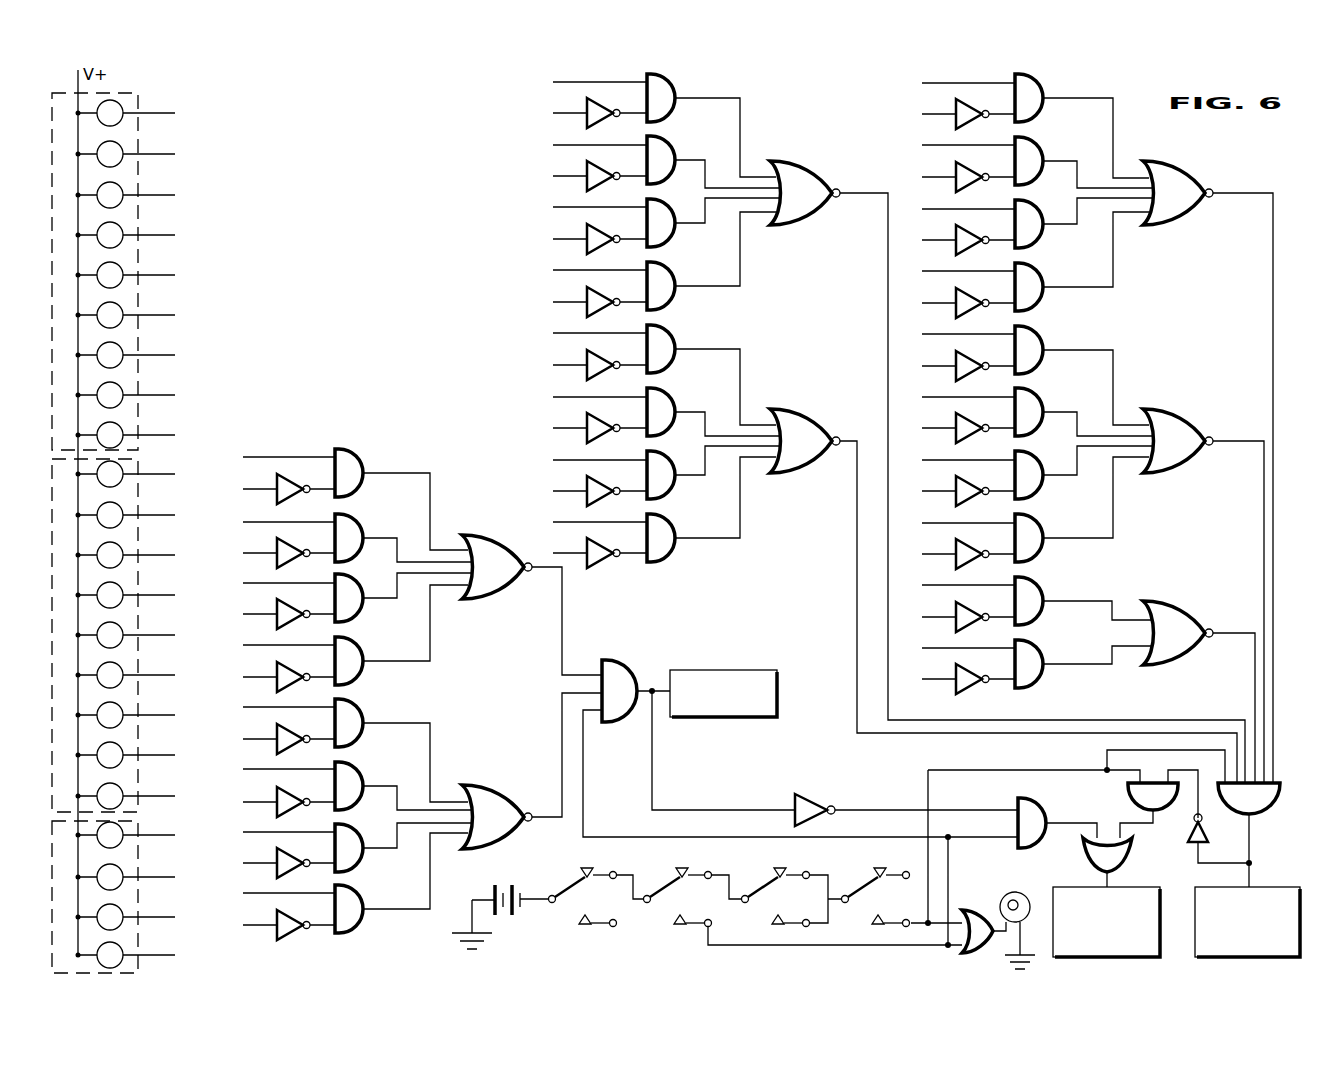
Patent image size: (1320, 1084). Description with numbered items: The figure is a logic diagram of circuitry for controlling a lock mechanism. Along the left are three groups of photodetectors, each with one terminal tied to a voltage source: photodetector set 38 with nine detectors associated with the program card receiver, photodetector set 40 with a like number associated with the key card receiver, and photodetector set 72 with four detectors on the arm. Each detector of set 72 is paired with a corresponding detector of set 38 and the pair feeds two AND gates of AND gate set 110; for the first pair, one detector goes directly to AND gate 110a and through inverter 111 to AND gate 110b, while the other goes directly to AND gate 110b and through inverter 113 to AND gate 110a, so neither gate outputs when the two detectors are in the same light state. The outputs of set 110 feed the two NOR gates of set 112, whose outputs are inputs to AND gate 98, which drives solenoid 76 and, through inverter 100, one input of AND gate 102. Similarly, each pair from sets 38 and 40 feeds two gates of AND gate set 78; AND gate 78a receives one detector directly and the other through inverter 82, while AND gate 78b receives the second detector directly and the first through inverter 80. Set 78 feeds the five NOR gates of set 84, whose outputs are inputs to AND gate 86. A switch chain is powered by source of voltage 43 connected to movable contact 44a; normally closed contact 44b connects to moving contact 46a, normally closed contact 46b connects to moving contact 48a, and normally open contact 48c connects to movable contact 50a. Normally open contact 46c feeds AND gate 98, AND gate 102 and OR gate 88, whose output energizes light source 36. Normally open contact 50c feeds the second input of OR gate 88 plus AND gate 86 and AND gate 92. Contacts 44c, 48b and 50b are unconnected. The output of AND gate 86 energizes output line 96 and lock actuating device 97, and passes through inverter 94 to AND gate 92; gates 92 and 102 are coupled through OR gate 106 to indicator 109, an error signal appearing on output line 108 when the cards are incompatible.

The light source 36 is at (1003, 896).
The photodetector set 38 is at (52, 340).
The photodetector set 40 is at (52, 670).
The source of voltage 43 is at (492, 894).
The movable contact 44a is at (581, 890).
The normally closed contact 44b is at (581, 890).
The normally-open switch contact 44c is at (564, 884).
The moving contact 46a is at (677, 890).
The normally closed contact 46b is at (677, 890).
The normally opened contact 46c is at (661, 884).
The moving contact 48a is at (773, 890).
The normally closed switch contact 48b is at (773, 890).
The normally open contact 48c is at (758, 884).
The movable contact 50a is at (872, 890).
The normally closed switch contact 50b is at (872, 890).
The normally open contact 50c is at (858, 884).
The photodetector set 72 is at (54, 885).
The solenoid 76 is at (780, 684).
The AND gate set 78 is at (853, 377).
The AND gate 78a is at (672, 114).
The AND gate 78b is at (668, 176).
The inverter 80 is at (607, 184).
The inverter 82 is at (607, 121).
The NOR gate set 84 is at (806, 170).
The AND gate 86 is at (1282, 790).
The OR gate 88 is at (968, 957).
The AND gate 92 is at (1128, 800).
The inverter 94 is at (1190, 840).
The output line 96 is at (1256, 860).
The lock actuating device 97 is at (1288, 958).
The AND gate 98 is at (620, 658).
The inverter 100 is at (824, 796).
The AND gate 102 is at (1042, 808).
The OR gate 106 is at (1082, 855).
The output line 108 is at (1112, 880).
The indicator 109 is at (1146, 958).
The AND gate set 110 is at (357, 676).
The AND gate 110a is at (356, 486).
The AND gate 110b is at (356, 551).
The inverter 111 is at (292, 497).
The NOR gate set 112 is at (476, 535).
The inverter 113 is at (292, 561).